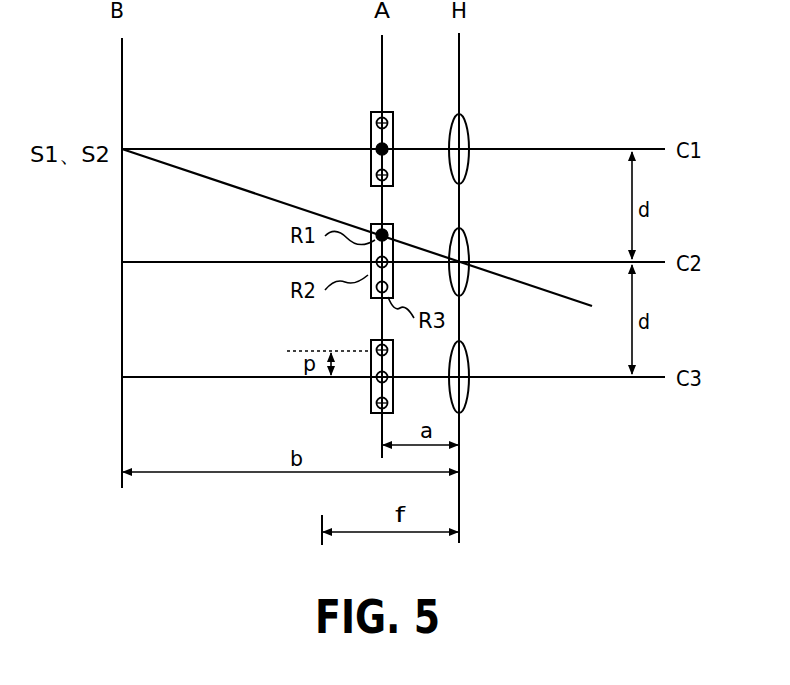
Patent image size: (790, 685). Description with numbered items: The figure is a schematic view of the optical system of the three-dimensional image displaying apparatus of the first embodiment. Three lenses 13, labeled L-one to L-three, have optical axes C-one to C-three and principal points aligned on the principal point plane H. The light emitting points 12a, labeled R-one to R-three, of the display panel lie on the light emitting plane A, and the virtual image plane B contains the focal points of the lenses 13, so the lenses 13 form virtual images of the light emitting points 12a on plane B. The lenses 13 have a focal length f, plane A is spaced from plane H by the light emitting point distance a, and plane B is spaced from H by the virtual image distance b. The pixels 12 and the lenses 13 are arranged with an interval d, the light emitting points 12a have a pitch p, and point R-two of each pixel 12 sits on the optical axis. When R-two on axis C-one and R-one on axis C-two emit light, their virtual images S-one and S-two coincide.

The pixel 12 is at (398, 220).
The light emitting point 12a is at (368, 104).
The lens 13 is at (470, 166).